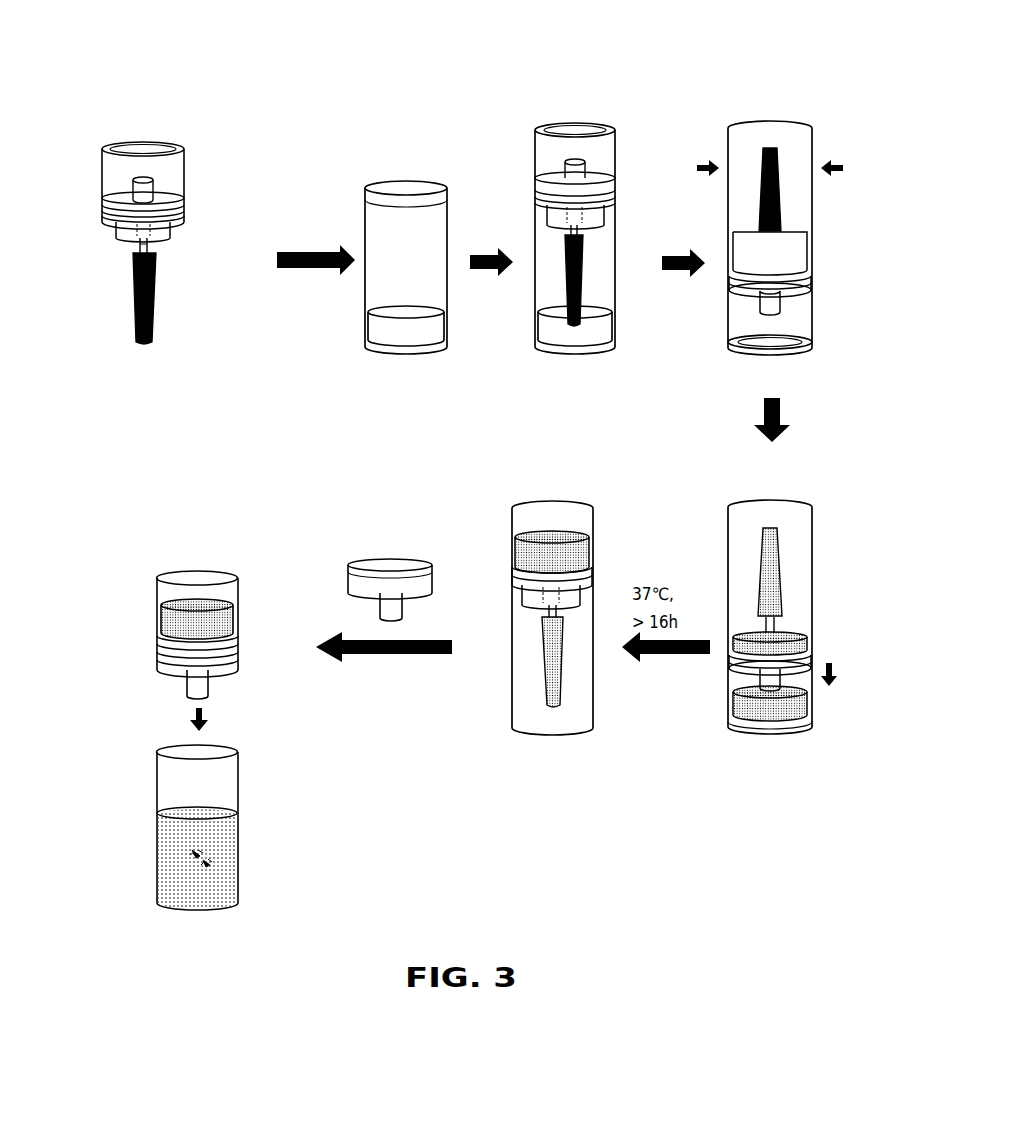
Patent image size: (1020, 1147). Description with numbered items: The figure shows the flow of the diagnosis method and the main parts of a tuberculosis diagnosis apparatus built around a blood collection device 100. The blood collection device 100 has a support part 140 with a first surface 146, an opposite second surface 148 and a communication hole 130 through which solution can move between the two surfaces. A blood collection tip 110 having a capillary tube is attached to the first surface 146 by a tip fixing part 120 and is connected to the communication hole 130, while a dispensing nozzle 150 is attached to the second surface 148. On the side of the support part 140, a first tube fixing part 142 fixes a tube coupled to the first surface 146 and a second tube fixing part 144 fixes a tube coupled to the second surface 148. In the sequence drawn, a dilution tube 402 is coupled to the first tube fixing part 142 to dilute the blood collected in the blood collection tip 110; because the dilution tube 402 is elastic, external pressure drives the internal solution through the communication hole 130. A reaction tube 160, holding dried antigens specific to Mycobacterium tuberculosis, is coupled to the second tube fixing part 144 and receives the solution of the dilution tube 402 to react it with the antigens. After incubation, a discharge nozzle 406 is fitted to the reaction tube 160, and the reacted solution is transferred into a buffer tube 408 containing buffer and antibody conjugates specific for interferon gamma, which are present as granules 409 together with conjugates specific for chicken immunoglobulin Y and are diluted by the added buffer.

The blood collection device 100 is at (96, 92).
The blood collection tip 110 is at (153, 310).
The tip fixing part 120 is at (140, 246).
The communication hole 130 is at (152, 231).
The support part 140 is at (358, 384).
The first tube fixing part 142 is at (172, 228).
The second tube fixing part 144 is at (184, 204).
The first surface 146 is at (185, 221).
The second surface 148 is at (186, 207).
The dispensing nozzle 150 is at (143, 190).
The reaction tube 160 is at (184, 165).
The dilution tube 402 is at (447, 297).
The discharge nozzle 406 is at (420, 564).
The buffer tube 408 is at (238, 772).
The granules 409 is at (196, 855).